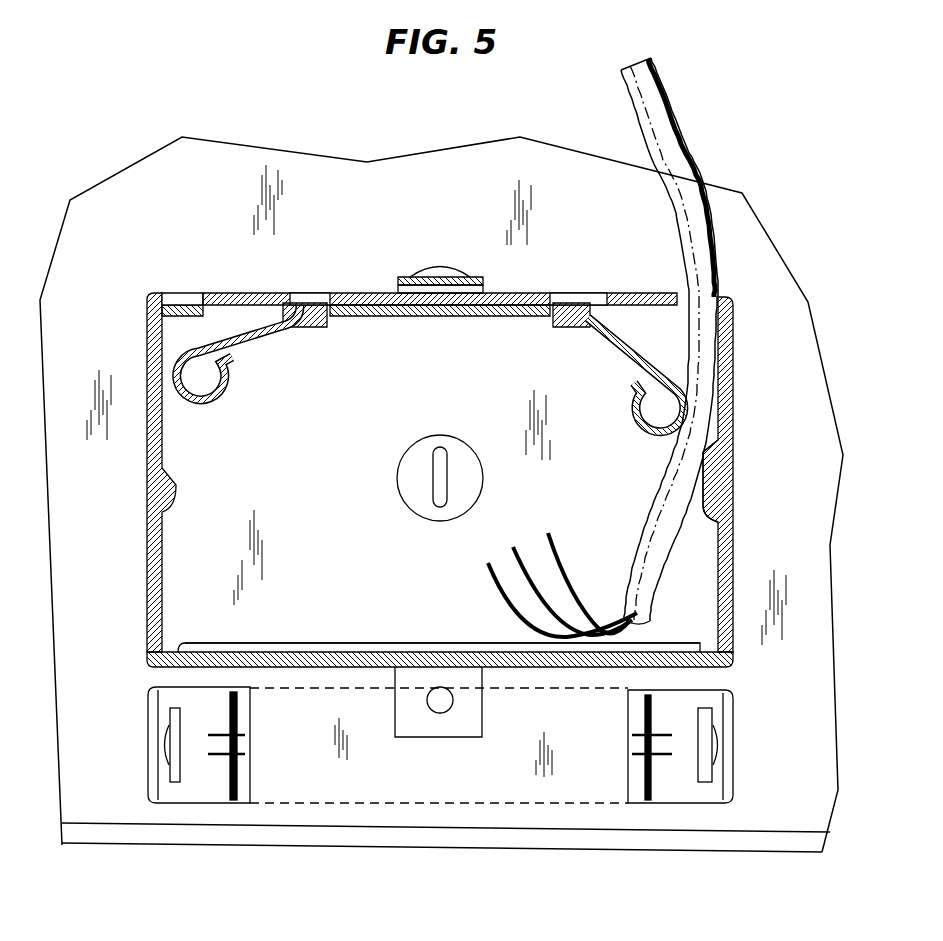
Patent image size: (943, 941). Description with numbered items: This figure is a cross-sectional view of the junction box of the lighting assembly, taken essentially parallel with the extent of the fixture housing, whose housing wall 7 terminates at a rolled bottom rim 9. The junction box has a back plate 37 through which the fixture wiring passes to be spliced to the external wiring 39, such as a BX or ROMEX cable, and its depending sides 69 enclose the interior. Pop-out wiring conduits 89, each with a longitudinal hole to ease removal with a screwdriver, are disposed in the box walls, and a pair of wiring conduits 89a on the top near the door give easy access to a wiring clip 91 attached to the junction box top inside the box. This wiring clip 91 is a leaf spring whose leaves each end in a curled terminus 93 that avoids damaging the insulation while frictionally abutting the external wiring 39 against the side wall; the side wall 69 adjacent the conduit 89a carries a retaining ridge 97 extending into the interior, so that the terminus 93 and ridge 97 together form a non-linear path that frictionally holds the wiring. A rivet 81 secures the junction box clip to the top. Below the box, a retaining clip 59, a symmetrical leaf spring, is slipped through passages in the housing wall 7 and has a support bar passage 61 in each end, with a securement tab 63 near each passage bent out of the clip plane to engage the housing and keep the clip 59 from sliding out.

The housing wall 7 is at (822, 610).
The bottom rim 9 is at (480, 848).
The junction box back plate 37 is at (476, 381).
The external wiring 39 is at (700, 134).
The retaining clip 59 is at (337, 803).
The support bar passage 61 is at (733, 748).
The securement tab 63 is at (250, 752).
The depending sides 69 is at (738, 380).
The rivet 81 is at (426, 275).
The pop-out wiring conduit 89 is at (414, 508).
The wiring conduits 89a is at (186, 292).
The wiring clip 91 is at (363, 316).
The terminus 93 is at (632, 395).
The retaining ridge 97 is at (736, 496).